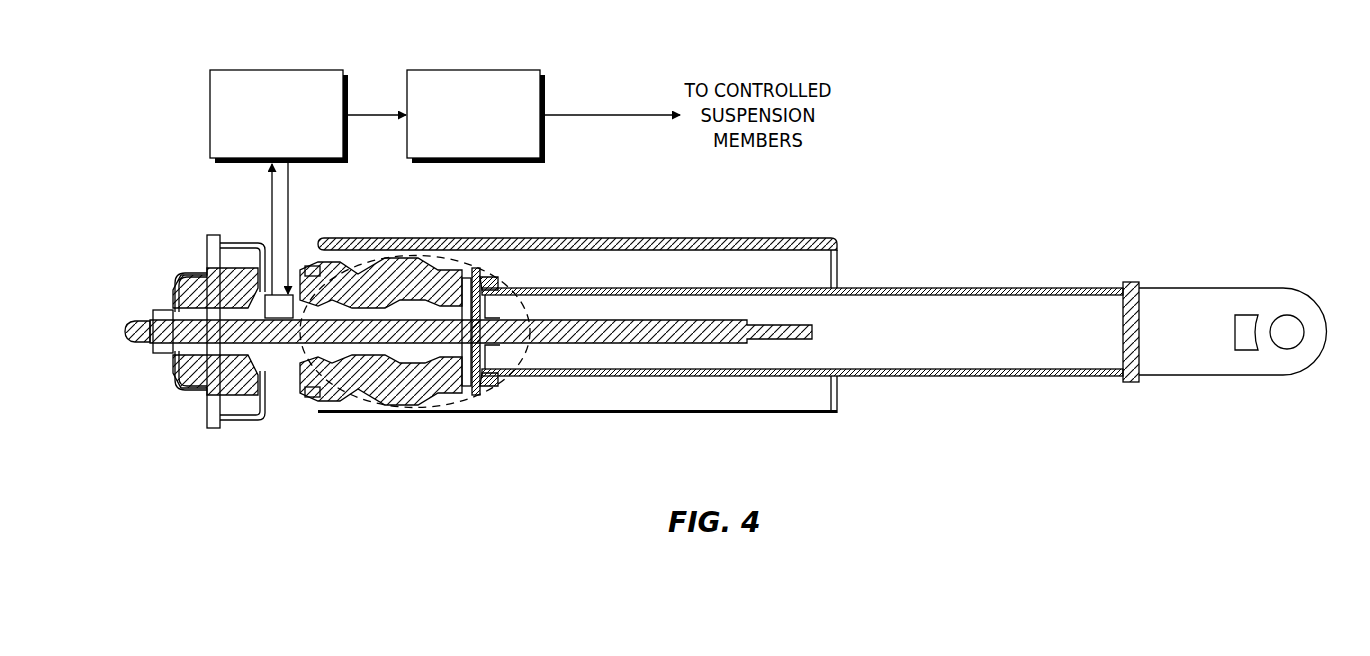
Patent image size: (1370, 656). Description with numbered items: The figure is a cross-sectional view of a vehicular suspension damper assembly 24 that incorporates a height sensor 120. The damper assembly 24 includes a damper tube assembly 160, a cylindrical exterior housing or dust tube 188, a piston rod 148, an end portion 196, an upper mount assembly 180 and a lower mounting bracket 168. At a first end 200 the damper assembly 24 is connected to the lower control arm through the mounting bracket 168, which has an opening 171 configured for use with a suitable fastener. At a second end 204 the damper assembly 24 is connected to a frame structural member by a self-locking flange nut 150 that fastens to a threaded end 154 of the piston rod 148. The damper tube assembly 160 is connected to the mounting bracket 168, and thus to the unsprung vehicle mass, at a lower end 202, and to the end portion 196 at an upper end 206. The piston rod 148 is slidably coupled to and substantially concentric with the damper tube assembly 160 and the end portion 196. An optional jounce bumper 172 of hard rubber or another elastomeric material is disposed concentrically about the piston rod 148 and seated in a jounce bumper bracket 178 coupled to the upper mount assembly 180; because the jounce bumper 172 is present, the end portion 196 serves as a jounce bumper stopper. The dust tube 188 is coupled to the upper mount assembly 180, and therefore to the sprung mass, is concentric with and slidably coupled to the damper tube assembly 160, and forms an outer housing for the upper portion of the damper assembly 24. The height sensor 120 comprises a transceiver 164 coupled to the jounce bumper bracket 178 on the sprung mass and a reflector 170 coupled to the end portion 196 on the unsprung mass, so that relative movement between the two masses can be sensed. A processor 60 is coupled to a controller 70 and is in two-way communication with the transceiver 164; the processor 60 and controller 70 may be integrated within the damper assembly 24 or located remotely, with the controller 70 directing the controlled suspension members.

The damper assembly 24 is at (903, 82).
The processor 60 is at (235, 70).
The controller 70 is at (430, 70).
The height sensor 120 is at (320, 413).
The piston rod 148 is at (615, 345).
The self-locking flange nut 150 is at (165, 358).
The threaded end 154 is at (132, 320).
The damper tube assembly 160 is at (985, 288).
The transceiver 164 is at (292, 282).
The lower mounting bracket 168 is at (1245, 377).
The reflector 170 is at (465, 278).
The opening 171 is at (1290, 320).
The jounce bumper 172 is at (402, 262).
The jounce bumper bracket 178 is at (266, 262).
The upper mount assembly 180 is at (218, 238).
The dust tube 188 is at (595, 238).
The end portion 196 is at (480, 268).
The first end 200 is at (1313, 270).
The lower end 202 is at (1130, 402).
The second end 204 is at (137, 420).
The upper end 206 is at (470, 445).